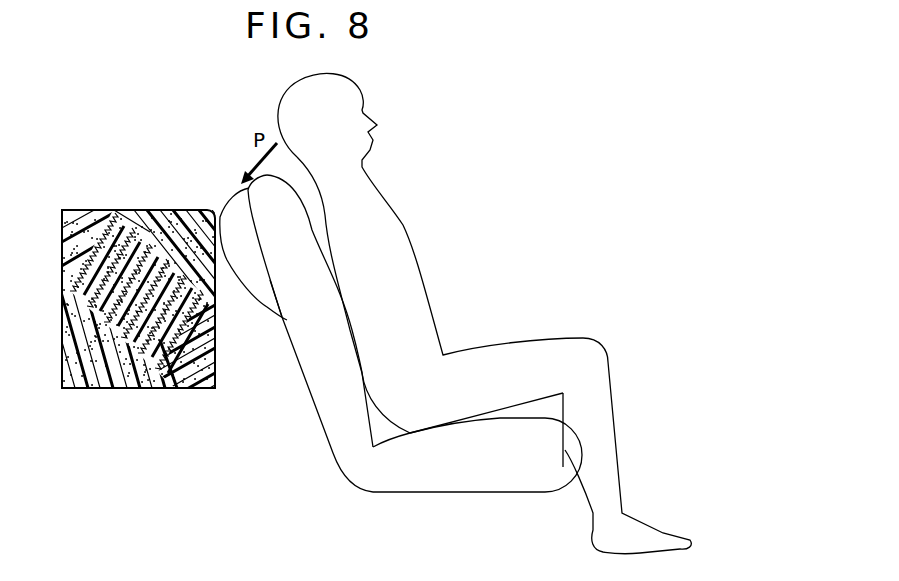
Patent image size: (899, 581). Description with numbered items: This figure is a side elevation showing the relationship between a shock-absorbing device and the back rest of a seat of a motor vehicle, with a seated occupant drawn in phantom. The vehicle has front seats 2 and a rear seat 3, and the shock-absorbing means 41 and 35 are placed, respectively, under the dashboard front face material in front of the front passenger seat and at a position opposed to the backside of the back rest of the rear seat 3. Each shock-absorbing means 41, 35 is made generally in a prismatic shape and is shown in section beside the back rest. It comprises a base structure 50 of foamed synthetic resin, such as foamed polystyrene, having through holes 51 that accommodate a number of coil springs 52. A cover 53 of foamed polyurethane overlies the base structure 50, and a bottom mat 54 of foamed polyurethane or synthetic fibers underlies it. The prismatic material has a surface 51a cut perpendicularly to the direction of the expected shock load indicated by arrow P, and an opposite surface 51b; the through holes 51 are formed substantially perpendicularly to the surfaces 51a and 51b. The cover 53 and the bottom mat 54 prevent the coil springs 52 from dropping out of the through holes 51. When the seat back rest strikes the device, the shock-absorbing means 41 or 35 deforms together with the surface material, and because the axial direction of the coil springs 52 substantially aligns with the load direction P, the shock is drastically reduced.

The front seat 2 is at (401, 364).
The rear seat 3 is at (409, 481).
The shock-absorbing means 35 is at (81, 201).
The shock-absorbing means 41 is at (125, 262).
The base structure 50 is at (63, 247).
The through holes 51 is at (170, 372).
The surface 51a is at (149, 232).
The surface 51b is at (147, 338).
The coil springs 52 is at (88, 307).
The cover 53 is at (173, 225).
The bottom mat 54 is at (92, 389).